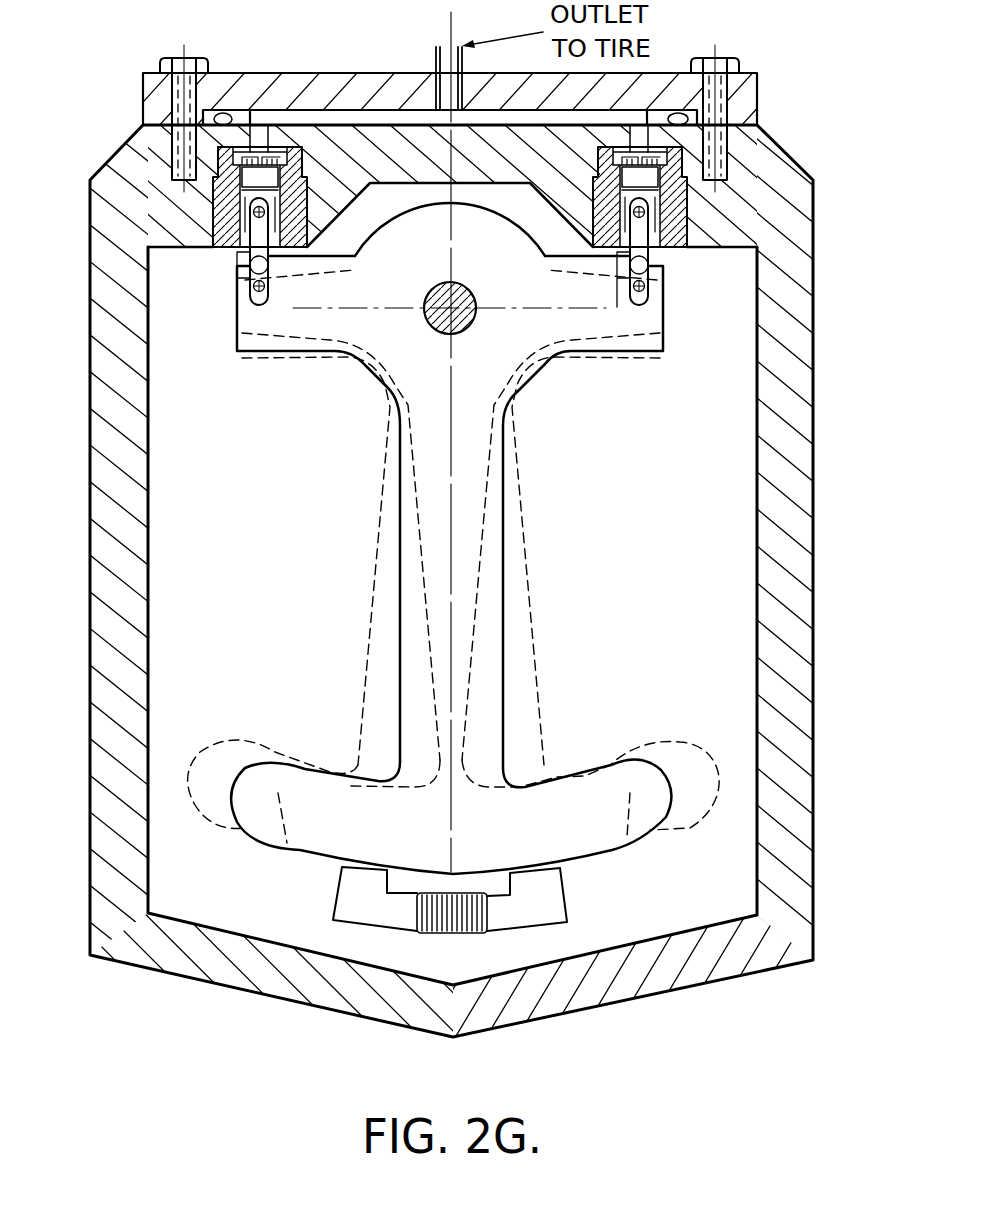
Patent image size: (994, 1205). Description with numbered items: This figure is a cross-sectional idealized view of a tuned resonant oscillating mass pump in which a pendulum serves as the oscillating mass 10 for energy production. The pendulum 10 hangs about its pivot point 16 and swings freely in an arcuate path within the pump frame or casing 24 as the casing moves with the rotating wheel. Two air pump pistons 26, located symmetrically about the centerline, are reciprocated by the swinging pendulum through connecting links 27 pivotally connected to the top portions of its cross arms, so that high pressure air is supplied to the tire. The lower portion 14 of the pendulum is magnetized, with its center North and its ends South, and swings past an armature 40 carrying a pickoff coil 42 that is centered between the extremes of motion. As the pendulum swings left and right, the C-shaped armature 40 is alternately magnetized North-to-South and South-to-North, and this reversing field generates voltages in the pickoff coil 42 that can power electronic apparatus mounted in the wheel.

The oscillating mass 10 is at (596, 511).
The lower portion 14 is at (305, 847).
The pivot point 16 is at (478, 333).
The pump frame or casing 24 is at (813, 607).
The air pump pistons 26 is at (240, 201).
The connecting links 27 is at (652, 233).
The armature 40 is at (563, 892).
The pickoff coil 42 is at (436, 934).